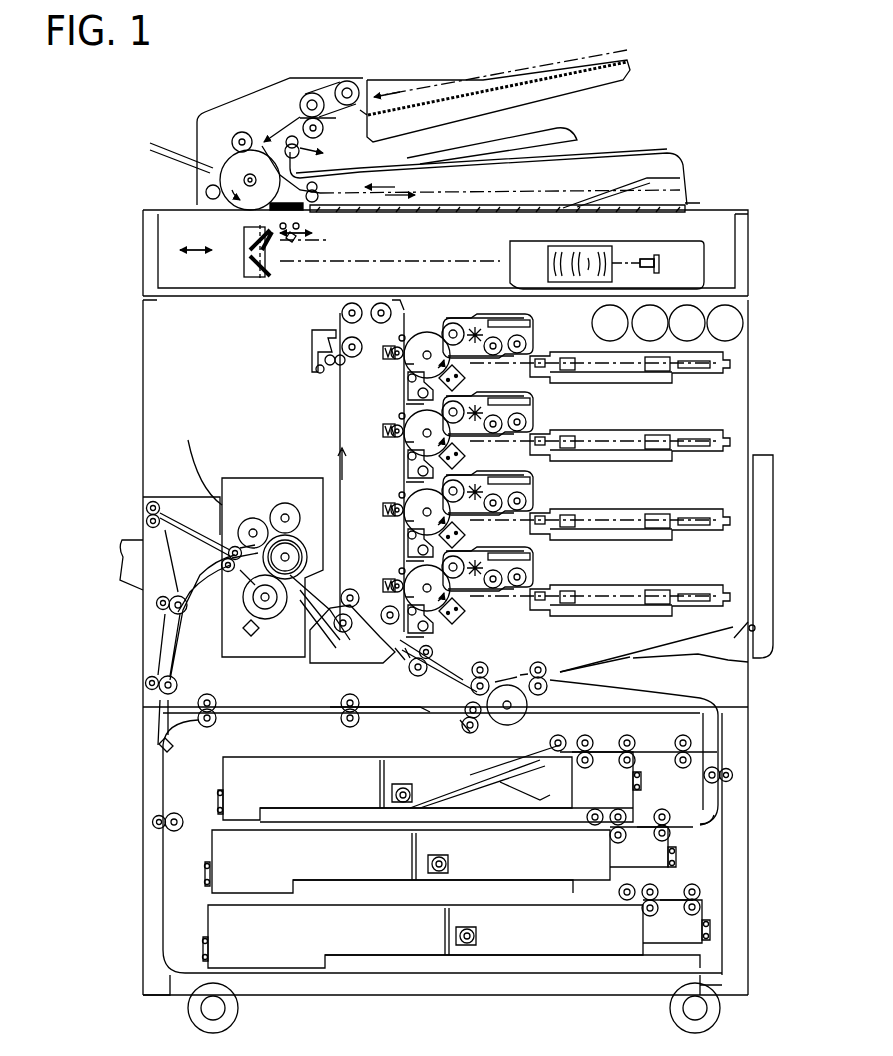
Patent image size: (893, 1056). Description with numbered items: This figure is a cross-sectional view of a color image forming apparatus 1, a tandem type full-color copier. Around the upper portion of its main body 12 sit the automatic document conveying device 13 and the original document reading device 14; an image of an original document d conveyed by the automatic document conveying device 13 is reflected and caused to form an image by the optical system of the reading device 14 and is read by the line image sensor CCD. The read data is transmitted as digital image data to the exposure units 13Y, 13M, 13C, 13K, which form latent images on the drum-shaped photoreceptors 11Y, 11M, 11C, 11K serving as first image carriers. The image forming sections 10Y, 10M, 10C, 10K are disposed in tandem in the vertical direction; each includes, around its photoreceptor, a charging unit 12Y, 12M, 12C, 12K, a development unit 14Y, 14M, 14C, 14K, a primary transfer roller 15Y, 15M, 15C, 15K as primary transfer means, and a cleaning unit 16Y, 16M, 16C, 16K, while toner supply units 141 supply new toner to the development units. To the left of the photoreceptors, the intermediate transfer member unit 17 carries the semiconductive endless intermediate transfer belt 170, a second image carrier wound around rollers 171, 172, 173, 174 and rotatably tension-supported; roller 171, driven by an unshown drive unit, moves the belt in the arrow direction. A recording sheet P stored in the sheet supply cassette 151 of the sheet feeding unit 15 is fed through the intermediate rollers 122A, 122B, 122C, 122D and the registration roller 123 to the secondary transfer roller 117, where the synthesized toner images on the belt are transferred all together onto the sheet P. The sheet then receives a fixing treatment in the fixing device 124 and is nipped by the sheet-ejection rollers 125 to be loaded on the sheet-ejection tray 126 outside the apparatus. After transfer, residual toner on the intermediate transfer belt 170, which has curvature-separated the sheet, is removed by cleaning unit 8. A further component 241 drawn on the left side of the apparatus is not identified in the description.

The color image forming apparatus 1 is at (127, 380).
The automatic document conveying device 13 is at (218, 88).
The original document d is at (503, 75).
The original document reading device 14 is at (212, 234).
The line image sensor CCD is at (660, 262).
The intermediate transfer member unit 17 is at (285, 392).
The cleaning unit 8 is at (312, 360).
The intermediate transfer belt 170 is at (338, 418).
The roller 171 is at (342, 313).
The roller 174 is at (386, 300).
The photoreceptor 11Y is at (420, 338).
The photoreceptor 11M is at (398, 431).
The photoreceptor 11C is at (401, 509).
The photoreceptor 11K is at (402, 581).
The charging unit 12Y is at (464, 376).
The charging unit 12M is at (473, 455).
The charging unit 12C is at (472, 532).
The charging unit 12K is at (478, 611).
The development unit 14Y is at (482, 318).
The development unit 14M is at (494, 406).
The development unit 14C is at (494, 484).
The development unit 14K is at (492, 561).
The primary transfer roller 15Y is at (394, 362).
The primary transfer roller 15M is at (383, 440).
The primary transfer roller 15C is at (374, 513).
The primary transfer roller 15K is at (373, 580).
The cleaning unit 16Y is at (410, 395).
The cleaning unit 16M is at (394, 463).
The cleaning unit 16C is at (393, 541).
The cleaning unit 16K is at (451, 618).
The exposure unit 13Y is at (650, 384).
The exposure unit 13M is at (600, 464).
The exposure unit 13C is at (600, 506).
The exposure unit 13K is at (600, 581).
The image forming section 10Y is at (587, 326).
The image forming section 10M is at (531, 402).
The image forming section 10C is at (531, 480).
The image forming section 10K is at (527, 559).
The toner supply unit 141 is at (667, 323).
The main body 12 is at (764, 406).
The fixing device 124 is at (235, 482).
The roller 172 is at (316, 640).
The secondary transfer roller 117 is at (355, 627).
The roller 173 is at (435, 648).
The registration roller 123 is at (412, 675).
The intermediate roller 122D is at (487, 667).
The intermediate roller 122C is at (548, 688).
The intermediate roller 122B is at (665, 702).
The intermediate roller 122A is at (684, 737).
The sheet-ejection tray 126 is at (133, 545).
The sheet-ejection rollers 125 is at (165, 511).
The reverse conveyance path 241 is at (202, 556).
The sheet feeding unit 15 is at (762, 795).
The sheet supply cassette 151 is at (290, 756).
The recording sheet P is at (480, 775).